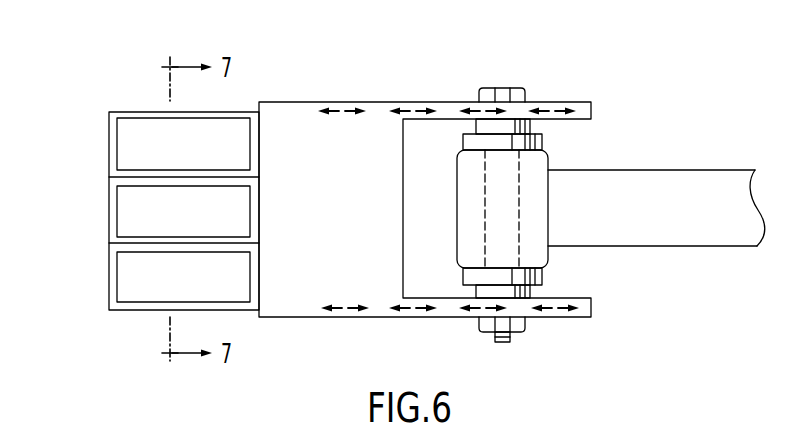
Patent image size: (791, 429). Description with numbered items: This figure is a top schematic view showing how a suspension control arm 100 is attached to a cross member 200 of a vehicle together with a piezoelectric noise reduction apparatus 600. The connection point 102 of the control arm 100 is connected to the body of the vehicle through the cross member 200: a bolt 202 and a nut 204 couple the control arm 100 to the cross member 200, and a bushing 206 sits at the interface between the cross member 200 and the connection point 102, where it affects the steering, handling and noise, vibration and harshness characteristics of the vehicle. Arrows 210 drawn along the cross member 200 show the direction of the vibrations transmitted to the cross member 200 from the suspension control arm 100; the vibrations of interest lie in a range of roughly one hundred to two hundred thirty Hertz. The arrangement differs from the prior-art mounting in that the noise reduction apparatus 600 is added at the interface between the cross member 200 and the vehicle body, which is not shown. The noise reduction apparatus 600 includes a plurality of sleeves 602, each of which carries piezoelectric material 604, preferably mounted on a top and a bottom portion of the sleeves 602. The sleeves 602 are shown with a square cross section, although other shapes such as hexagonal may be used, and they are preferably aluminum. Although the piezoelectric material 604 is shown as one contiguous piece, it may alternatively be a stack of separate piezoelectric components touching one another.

The suspension control arm 100 is at (710, 238).
The connection point 102 is at (462, 218).
The cross member 200 is at (288, 318).
The bolt 202 is at (501, 88).
The nut 204 is at (528, 326).
The bushing 206 is at (463, 140).
The arrows 210 is at (345, 102).
The noise reduction apparatus 600 is at (123, 104).
The sleeve 602 is at (109, 145).
The piezoelectric material 604 is at (201, 158).